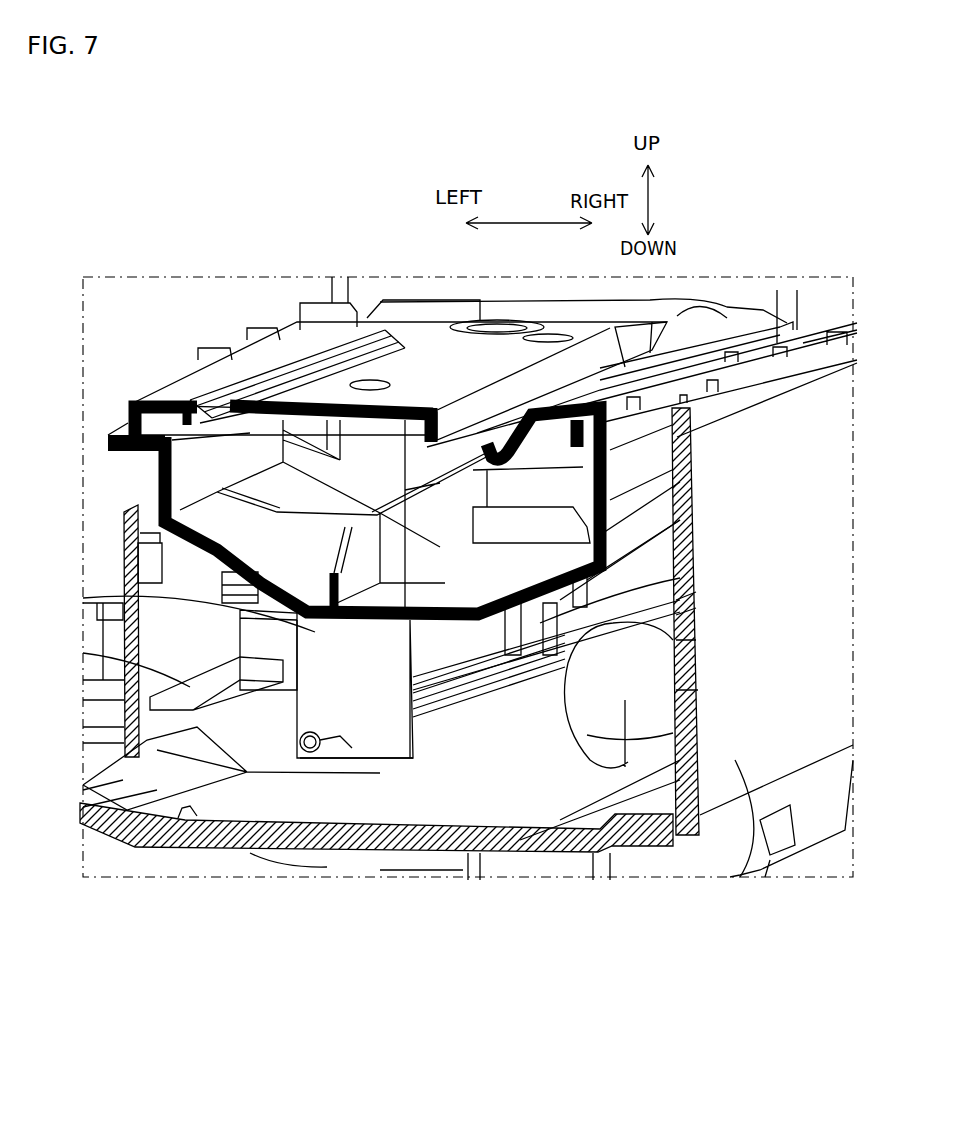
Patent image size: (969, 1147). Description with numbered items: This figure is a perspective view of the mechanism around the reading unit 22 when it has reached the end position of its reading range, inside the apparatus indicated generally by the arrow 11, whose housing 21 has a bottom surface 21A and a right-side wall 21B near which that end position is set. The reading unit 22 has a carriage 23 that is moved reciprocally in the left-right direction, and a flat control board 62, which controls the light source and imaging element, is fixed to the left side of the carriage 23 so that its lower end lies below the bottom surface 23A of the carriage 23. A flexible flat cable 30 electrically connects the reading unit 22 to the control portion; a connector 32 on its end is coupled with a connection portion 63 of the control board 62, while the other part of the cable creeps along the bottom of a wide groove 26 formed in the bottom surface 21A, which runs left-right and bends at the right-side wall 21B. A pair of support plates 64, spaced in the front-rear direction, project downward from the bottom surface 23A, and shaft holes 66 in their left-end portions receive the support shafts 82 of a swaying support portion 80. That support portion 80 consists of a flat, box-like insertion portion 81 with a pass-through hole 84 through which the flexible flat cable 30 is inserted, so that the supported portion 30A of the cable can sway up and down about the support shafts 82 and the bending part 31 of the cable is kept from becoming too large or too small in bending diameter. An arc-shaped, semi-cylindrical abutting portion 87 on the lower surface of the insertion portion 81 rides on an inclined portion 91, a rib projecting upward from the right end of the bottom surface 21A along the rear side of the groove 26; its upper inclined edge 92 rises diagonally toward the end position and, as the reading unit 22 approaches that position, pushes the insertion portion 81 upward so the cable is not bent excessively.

The image forming apparatus 11 is at (728, 243).
The housing 21 is at (803, 343).
The bottom surface 21A is at (663, 815).
The right-side wall 21B is at (735, 762).
The reading unit 22 is at (428, 320).
The carriage 23 is at (288, 343).
The bottom surface 23A is at (252, 620).
The groove 26 is at (180, 814).
The flexible flat cable 30 is at (680, 608).
The supported portion 30A is at (497, 590).
The bending part 31 is at (680, 665).
The connector 32 is at (188, 683).
The control board 62 is at (120, 536).
The connection portion 63 is at (155, 752).
The support plates 64 is at (393, 763).
The shaft holes 66 is at (328, 745).
The swaying support portion 80 is at (459, 735).
The insertion portion 81 is at (428, 676).
The support shafts 82 is at (312, 752).
The pass-through hole 84 is at (570, 616).
The abutting portion 87 is at (507, 700).
The inclined portion 91 is at (655, 742).
The inclined edge 92 is at (683, 606).